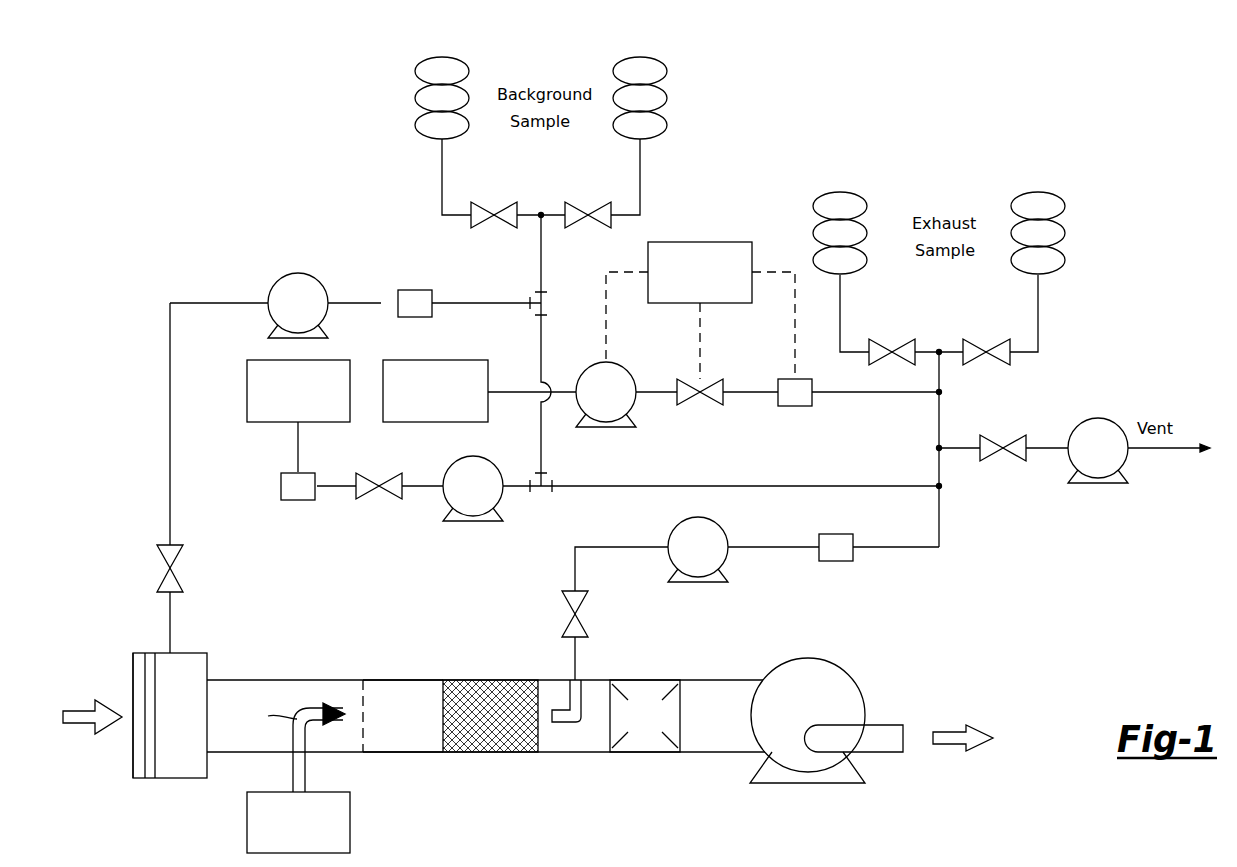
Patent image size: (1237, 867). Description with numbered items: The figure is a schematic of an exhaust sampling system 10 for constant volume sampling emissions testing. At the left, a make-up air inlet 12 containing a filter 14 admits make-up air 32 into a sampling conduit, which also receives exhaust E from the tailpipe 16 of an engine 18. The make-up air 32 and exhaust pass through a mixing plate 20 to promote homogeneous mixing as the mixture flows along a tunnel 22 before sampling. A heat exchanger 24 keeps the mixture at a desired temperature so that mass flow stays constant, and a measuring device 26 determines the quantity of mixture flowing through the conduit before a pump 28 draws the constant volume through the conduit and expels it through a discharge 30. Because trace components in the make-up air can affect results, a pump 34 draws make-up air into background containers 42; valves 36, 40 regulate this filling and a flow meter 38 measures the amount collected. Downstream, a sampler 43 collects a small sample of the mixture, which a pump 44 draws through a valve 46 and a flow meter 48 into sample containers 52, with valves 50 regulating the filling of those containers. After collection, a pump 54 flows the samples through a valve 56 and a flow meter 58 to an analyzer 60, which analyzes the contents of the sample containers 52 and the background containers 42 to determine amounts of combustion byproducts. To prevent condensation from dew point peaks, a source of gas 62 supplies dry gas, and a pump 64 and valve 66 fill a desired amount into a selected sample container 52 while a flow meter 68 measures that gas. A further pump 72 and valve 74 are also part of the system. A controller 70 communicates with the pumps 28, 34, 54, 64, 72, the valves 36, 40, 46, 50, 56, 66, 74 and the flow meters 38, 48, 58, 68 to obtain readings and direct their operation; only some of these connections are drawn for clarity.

The exhaust sampling system 10 is at (694, 806).
The make-up air inlet 12 is at (133, 759).
The filter 14 is at (178, 765).
The tailpipe 16 is at (330, 727).
The engine 18 is at (350, 823).
The mixing plate 20 is at (370, 686).
The tunnel 22 is at (415, 690).
The heat exchanger 24 is at (492, 690).
The measuring device 26 is at (650, 680).
The pump 28 is at (834, 665).
The discharge 30 is at (888, 725).
The make-up air 32 is at (80, 710).
The pump 34 is at (300, 273).
The valve 36 is at (177, 560).
The flow meter 38 is at (415, 290).
The valves 40 is at (481, 202).
The background containers 42 is at (415, 73).
The sampler 43 is at (578, 723).
The pump 44 is at (687, 520).
The valve 46 is at (583, 603).
The flow meter 48 is at (836, 561).
The valves 50 is at (880, 340).
The sample containers 52 is at (813, 208).
The pump 54 is at (460, 458).
The valve 56 is at (366, 498).
The flow meter 58 is at (298, 500).
The analyzer 60 is at (247, 392).
The source of gas 62 is at (460, 360).
The pump 64 is at (620, 365).
The valve 66 is at (695, 405).
The flow meter 68 is at (795, 406).
The controller 70 is at (702, 242).
The pump 72 is at (1113, 419).
The valve 74 is at (995, 461).